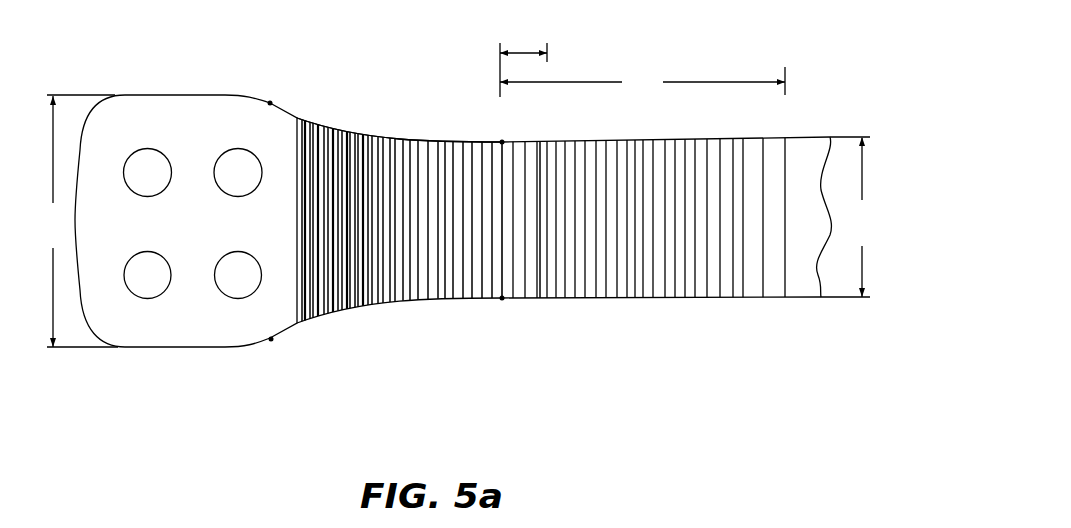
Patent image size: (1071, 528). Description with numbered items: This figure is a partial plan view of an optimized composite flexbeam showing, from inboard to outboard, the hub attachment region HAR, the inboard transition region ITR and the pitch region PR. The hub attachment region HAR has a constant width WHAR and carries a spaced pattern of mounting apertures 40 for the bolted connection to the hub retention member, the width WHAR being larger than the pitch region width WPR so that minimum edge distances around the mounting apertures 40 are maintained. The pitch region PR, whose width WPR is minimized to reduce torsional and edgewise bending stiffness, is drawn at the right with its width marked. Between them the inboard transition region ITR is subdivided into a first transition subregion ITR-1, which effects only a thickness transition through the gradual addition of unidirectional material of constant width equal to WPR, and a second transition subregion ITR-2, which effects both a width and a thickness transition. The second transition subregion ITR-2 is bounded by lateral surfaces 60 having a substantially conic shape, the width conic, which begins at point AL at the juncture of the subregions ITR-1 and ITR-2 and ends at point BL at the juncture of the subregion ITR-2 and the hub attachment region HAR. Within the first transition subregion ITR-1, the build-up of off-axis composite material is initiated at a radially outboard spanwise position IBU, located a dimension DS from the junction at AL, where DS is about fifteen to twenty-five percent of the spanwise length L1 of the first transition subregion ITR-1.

The mounting apertures 40 is at (219, 158).
The lateral surfaces 60 is at (338, 130).
The hub attachment region HAR is at (75, 403).
The point B_L BL is at (270, 103).
The inboard transition region ITR is at (247, 400).
The first transition subregion ITR-1 is at (785, 344).
The second transition subregion ITR-2 is at (270, 344).
The point A_L AL is at (502, 142).
The spanwise position I_BU IBU is at (540, 141).
The pitch region PR is at (785, 397).
The dimension D_S DS is at (523, 61).
The spanwise length L_1 L1 is at (642, 82).
The width dimension W_HAR WHAR is at (71, 221).
The width dimension W_PR WPR is at (858, 217).